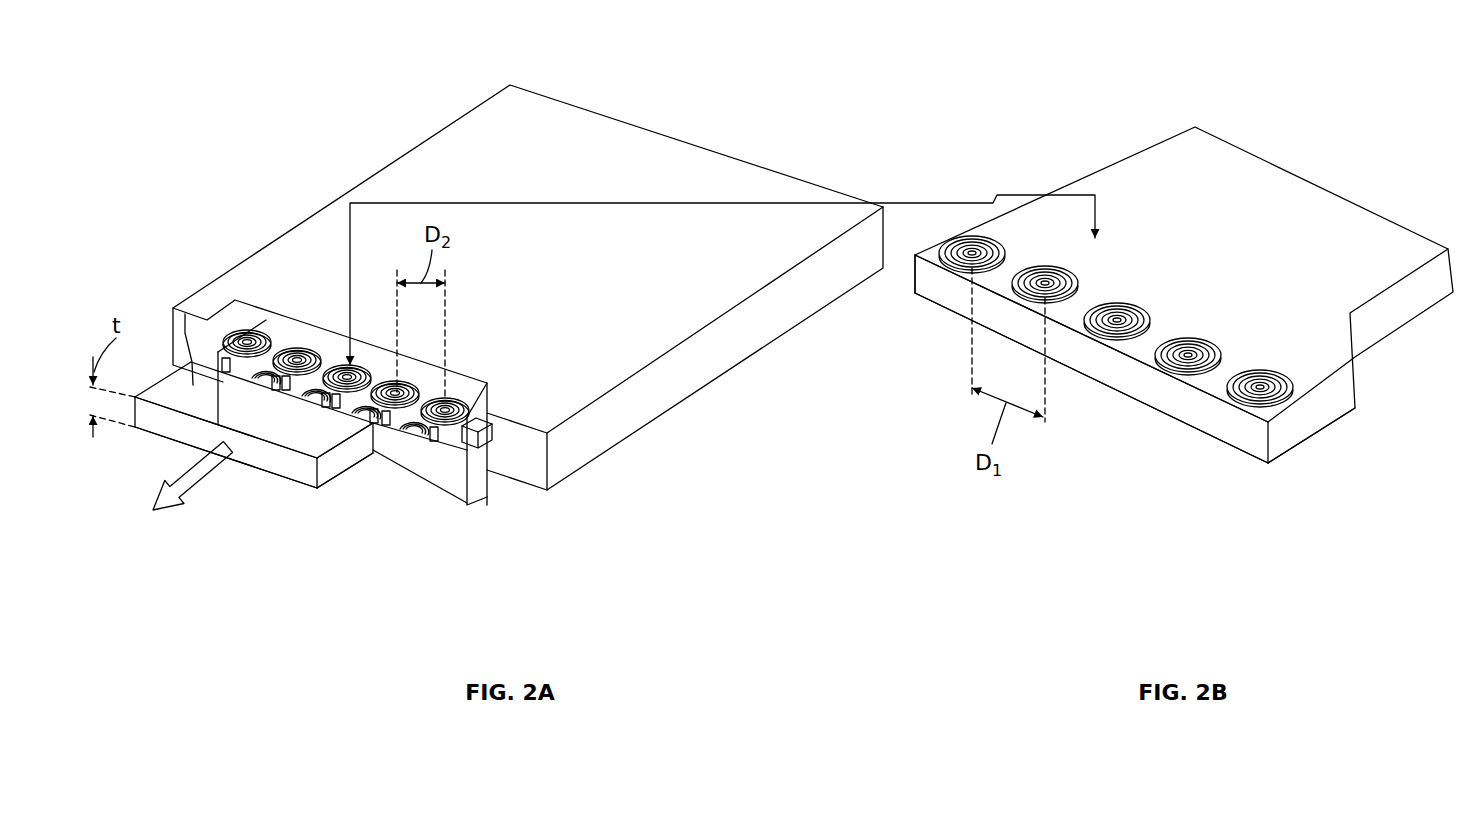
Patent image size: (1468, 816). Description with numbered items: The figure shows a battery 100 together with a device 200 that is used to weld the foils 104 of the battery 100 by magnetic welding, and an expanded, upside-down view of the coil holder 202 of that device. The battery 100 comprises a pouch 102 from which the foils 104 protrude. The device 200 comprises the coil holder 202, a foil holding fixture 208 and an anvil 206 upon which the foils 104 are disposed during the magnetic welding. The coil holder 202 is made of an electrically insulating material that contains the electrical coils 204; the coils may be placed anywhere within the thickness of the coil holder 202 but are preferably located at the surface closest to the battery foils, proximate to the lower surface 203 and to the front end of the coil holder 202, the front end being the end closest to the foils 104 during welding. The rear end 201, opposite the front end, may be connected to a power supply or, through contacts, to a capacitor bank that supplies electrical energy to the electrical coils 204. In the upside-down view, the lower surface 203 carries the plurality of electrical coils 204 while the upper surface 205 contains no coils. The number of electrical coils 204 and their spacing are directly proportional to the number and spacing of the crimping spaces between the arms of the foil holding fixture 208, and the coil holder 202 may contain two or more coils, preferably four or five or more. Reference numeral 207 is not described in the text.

In FIG. 2A, the battery 100 is at (339, 46).
In FIG. 2A, the pouch 102 is at (583, 125).
In FIG. 2A, the foils 104 is at (470, 448).
In FIG. 2A, the device 200 is at (336, 483).
In FIG. 2A, the rear end 201 is at (268, 462).
In FIG. 2A, the coil holder 202 is at (165, 391).
In FIG. 2B, the coil holder 202 is at (934, 311).
In FIG. 2B, the lower surface 203 is at (1290, 197).
In FIG. 2A, the electrical coils 204 is at (256, 333).
In FIG. 2B, the electrical coils 204 is at (1213, 340).
In FIG. 2A, the upper surface 205 is at (198, 407).
In FIG. 2B, the upper surface 205 is at (1307, 443).
In FIG. 2A, the anvil 206 is at (456, 482).
In FIG. 2B, the side surface 207 is at (1147, 386).
In FIG. 2A, the foil holding fixture 208 is at (488, 434).